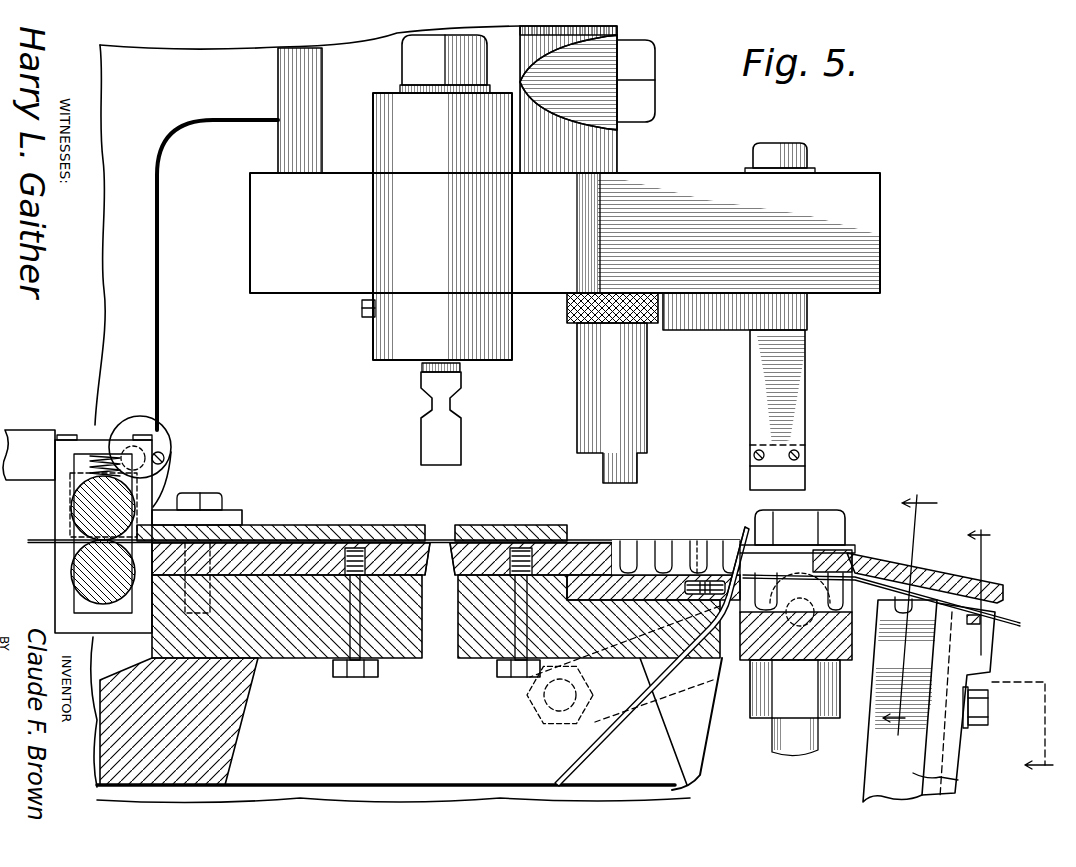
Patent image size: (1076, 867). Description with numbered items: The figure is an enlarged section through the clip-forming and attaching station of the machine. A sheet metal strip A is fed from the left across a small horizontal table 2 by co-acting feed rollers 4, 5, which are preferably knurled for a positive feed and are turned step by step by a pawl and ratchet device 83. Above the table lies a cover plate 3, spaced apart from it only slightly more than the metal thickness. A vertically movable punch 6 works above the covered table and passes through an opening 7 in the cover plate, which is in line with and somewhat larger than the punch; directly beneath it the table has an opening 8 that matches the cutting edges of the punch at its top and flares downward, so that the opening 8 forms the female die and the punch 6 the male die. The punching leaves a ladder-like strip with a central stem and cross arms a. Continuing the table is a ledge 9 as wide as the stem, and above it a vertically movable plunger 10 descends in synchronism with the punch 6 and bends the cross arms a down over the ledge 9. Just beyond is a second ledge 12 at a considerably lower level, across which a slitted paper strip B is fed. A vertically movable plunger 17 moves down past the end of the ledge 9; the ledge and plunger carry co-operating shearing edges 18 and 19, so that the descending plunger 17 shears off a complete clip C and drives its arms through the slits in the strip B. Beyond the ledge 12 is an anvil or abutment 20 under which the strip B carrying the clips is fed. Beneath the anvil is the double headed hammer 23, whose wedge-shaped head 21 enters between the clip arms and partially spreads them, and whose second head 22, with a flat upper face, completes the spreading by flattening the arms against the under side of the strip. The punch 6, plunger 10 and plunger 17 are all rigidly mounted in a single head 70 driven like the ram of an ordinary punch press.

The head 70 is at (565, 218).
The vertically movable plunger 17 is at (798, 373).
The vertically movable plunger 10 is at (625, 397).
The shearing edge 19 is at (748, 488).
The punch 6 is at (447, 385).
The pawl and ratchet device 83 is at (160, 434).
The feed roller 4 is at (77, 507).
The feed roller 5 is at (77, 572).
The cover plate 3 is at (280, 525).
The table 2 is at (388, 553).
The opening 7 is at (445, 525).
The opening 8 is at (432, 550).
The ledge 9 is at (573, 537).
The metal strip A is at (50, 540).
The cross arms a is at (487, 527).
The paper strip B is at (590, 733).
The shearing edge 18 is at (743, 537).
The clip C is at (770, 580).
The second ledge 12 is at (835, 575).
The anvil or abutment 20 is at (907, 597).
The wedge-shaped head 21 is at (917, 618).
The second head 22 is at (1007, 642).
The double headed hammer 23 is at (958, 780).